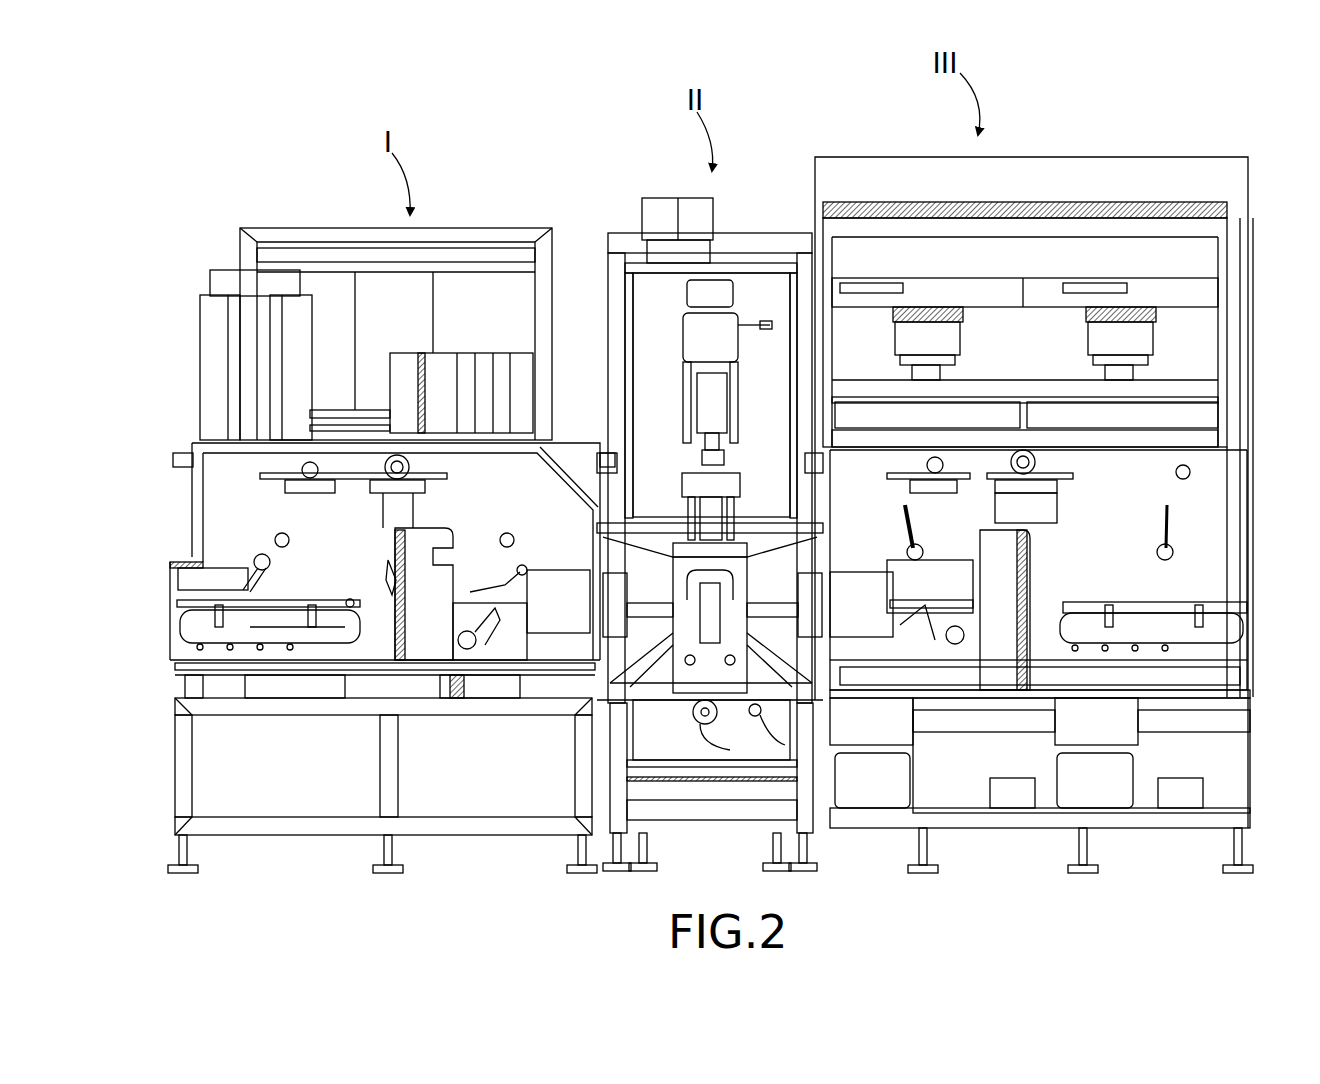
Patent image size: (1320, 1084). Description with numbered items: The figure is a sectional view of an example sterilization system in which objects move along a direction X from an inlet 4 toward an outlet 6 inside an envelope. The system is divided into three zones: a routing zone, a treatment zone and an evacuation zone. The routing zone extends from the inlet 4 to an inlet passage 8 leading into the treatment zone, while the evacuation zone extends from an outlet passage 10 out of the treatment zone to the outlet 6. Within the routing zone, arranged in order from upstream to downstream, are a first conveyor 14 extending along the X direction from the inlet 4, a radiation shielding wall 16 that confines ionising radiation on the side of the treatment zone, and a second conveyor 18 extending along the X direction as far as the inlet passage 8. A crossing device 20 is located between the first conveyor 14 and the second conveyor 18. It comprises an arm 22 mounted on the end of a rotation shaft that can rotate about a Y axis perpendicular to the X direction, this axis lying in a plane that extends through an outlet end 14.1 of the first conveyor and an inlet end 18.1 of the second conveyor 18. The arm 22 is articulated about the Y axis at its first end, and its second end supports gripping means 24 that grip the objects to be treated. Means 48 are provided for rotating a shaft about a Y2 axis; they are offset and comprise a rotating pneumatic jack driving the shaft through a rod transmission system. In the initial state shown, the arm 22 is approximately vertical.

The inlet 4 is at (173, 658).
The outlet 6 is at (1237, 663).
The inlet passage 8 is at (580, 632).
The outlet passage 10 is at (895, 620).
The first conveyor 14 is at (238, 637).
The outlet end of the first conveyor 14.1 is at (343, 637).
The radiation shielding wall 16 is at (393, 577).
The second conveyor 18 is at (522, 610).
The inlet end of the second conveyor 18.1 is at (507, 635).
The crossing device 20 is at (252, 482).
The arm 22 is at (400, 510).
The gripping means 24 is at (300, 452).
The means for rotating the shaft 48 is at (262, 543).